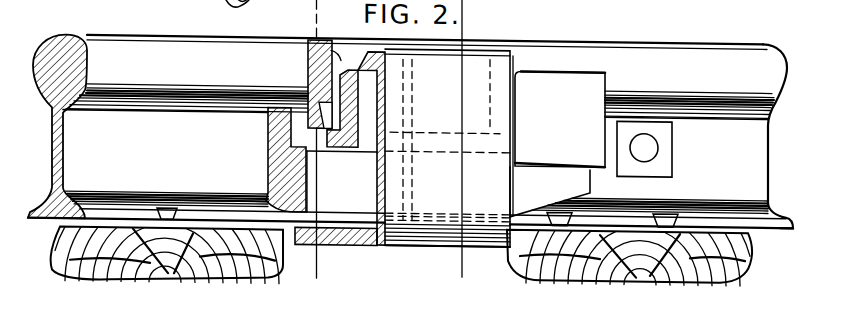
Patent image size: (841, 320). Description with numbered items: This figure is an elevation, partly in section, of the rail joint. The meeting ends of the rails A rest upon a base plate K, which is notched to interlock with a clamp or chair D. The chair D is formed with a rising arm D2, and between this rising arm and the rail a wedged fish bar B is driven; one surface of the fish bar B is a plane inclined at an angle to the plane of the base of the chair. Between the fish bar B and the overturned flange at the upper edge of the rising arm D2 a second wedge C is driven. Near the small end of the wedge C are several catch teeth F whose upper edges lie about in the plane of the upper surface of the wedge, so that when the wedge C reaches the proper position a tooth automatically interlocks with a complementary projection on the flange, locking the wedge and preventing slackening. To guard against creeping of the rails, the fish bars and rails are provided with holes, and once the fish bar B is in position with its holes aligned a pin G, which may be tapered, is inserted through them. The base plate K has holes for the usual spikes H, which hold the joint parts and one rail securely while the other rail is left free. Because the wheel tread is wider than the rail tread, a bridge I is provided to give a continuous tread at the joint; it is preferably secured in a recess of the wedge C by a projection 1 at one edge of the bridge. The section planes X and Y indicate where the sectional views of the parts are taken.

The meeting ends of the rails A is at (165, 152).
The wedged fish bar B is at (342, 141).
The second wedge C is at (560, 119).
The clamp or chair D is at (338, 242).
The rising arm D2 is at (449, 148).
The catch teeth F is at (548, 312).
The pin G is at (644, 140).
The spikes H is at (160, 216).
The bridge I is at (308, 39).
The base plate K is at (710, 221).
The section plane X X is at (470, 150).
The section plane Y Y is at (312, 153).
The slot 1 is at (330, 117).